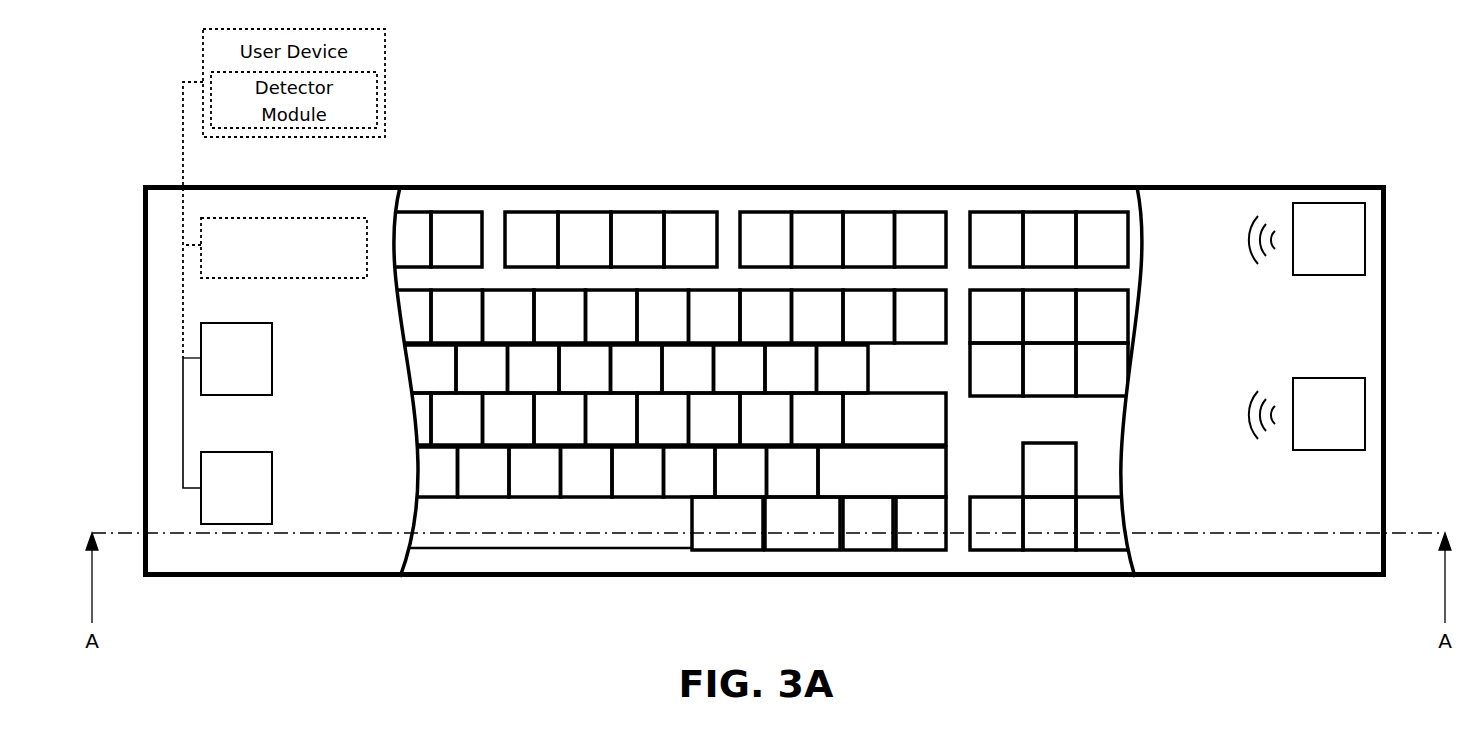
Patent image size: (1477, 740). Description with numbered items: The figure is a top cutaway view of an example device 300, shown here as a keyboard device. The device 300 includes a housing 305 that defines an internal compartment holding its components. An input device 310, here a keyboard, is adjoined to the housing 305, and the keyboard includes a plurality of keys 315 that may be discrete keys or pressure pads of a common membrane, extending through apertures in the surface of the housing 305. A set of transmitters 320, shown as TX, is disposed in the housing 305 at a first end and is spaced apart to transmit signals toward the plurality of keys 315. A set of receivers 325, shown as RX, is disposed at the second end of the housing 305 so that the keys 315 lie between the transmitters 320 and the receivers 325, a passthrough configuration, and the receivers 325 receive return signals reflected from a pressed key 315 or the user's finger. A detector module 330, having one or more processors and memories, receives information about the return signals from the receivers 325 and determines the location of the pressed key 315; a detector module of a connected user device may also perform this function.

The device 300 is at (437, 167).
The housing 305 is at (1188, 208).
The input device 310 is at (933, 208).
The keys 315 is at (580, 216).
The transmitters 320 is at (1330, 275).
The receivers 325 is at (274, 357).
The detector module 330 is at (284, 248).